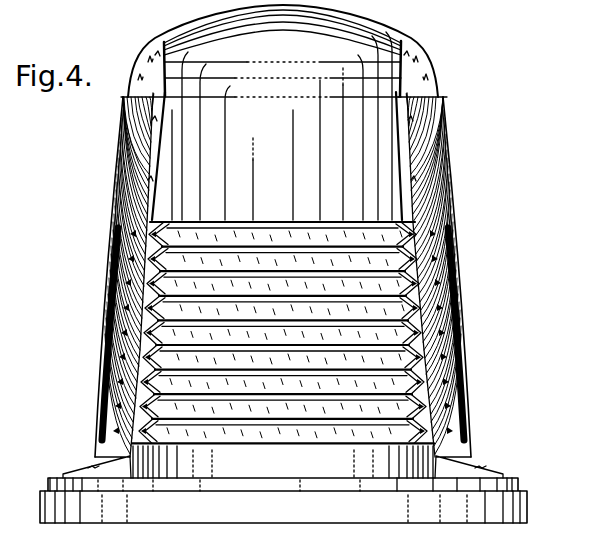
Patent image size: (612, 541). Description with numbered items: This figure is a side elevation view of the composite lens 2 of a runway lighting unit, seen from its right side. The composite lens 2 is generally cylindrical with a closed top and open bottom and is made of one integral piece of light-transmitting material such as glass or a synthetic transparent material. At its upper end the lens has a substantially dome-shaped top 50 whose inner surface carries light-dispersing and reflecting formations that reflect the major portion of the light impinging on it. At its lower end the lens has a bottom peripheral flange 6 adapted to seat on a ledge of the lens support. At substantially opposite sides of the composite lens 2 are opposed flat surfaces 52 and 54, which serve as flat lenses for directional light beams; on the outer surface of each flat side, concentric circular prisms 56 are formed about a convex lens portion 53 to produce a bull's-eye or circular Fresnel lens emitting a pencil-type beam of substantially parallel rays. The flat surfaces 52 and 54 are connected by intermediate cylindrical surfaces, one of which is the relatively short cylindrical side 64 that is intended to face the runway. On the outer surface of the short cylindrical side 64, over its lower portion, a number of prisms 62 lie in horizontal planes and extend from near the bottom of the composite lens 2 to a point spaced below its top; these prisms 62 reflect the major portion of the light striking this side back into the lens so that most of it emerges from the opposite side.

The composite lens 2 is at (96, 223).
The bottom peripheral flange 6 is at (527, 501).
The dome-shaped top 50 is at (376, 14).
The flat surface 52 is at (445, 190).
The convex lens portion 53 is at (112, 338).
The flat surface 54 is at (130, 158).
The concentric circular prisms 56 is at (137, 122).
The prisms 62 is at (284, 268).
The short cylindrical side 64 is at (250, 238).